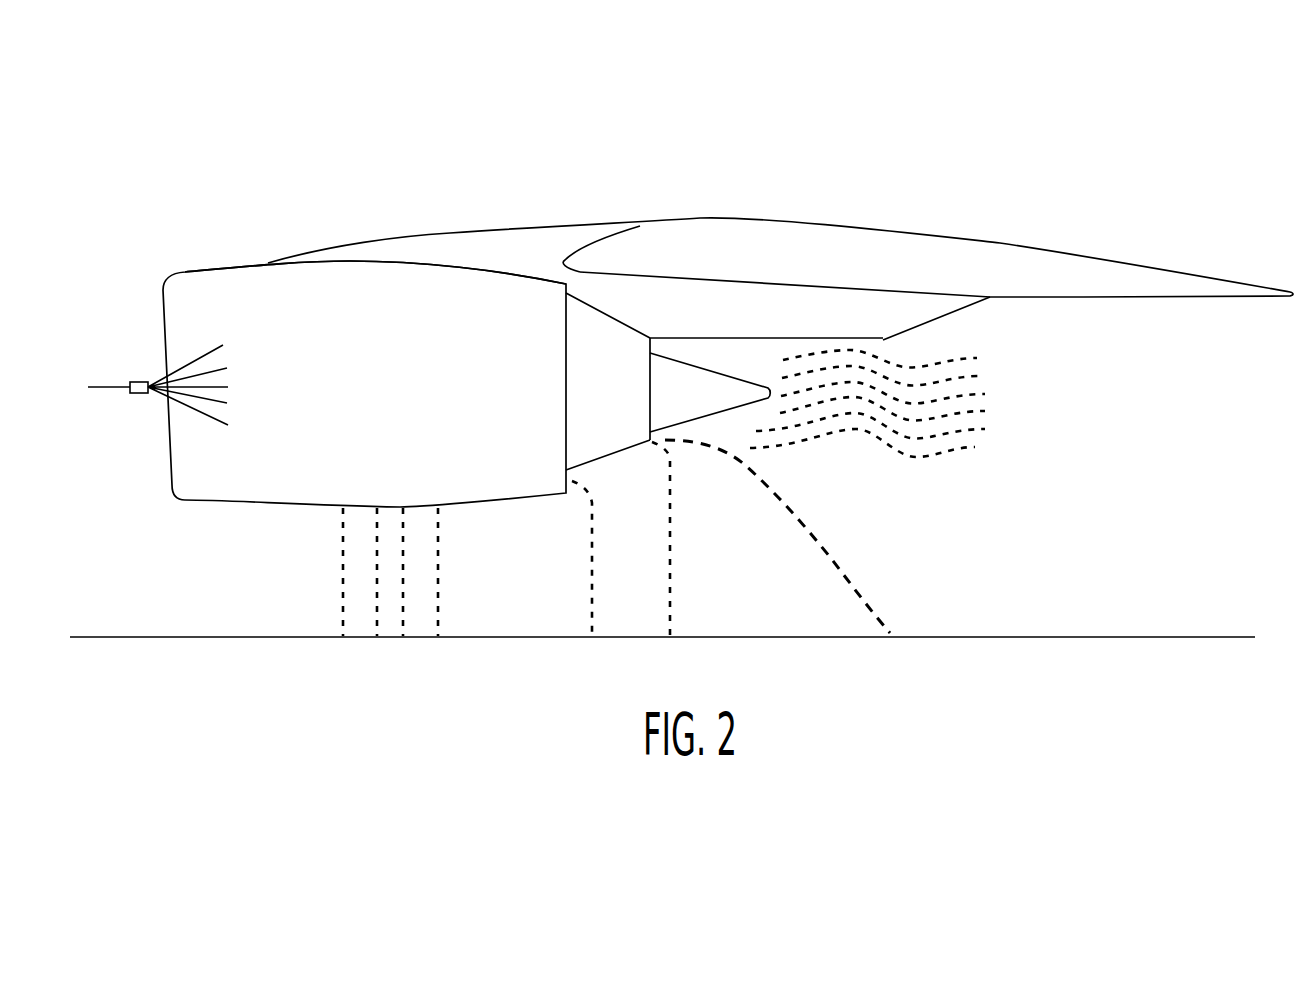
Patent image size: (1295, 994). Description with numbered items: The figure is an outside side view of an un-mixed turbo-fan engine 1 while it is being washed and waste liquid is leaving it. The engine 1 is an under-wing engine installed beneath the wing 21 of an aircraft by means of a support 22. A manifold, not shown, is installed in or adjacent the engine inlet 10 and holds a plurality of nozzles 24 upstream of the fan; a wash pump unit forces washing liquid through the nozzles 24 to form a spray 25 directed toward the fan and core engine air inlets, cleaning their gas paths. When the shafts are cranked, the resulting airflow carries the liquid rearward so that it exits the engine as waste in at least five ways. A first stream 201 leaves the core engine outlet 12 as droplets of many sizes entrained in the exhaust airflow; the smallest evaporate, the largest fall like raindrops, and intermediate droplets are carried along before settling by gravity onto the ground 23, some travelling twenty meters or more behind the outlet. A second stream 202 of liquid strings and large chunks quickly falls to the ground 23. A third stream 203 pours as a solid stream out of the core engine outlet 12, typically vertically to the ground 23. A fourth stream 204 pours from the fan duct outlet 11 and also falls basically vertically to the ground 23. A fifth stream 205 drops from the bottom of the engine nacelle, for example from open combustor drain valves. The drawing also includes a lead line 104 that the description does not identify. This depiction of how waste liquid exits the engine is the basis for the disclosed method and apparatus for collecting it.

The engine 1 is at (210, 285).
The engine inlet 10 is at (172, 470).
The fan duct outlet 11 is at (567, 297).
The core engine outlet 12 is at (650, 350).
The wing 21 is at (748, 237).
The support 22 is at (510, 243).
The exhaust nozzle 104 is at (693, 385).
The nozzles 24 is at (140, 380).
The spray 25 is at (195, 412).
The stream 201 is at (933, 453).
The stream 202 is at (830, 557).
The stream 203 is at (672, 542).
The stream 204 is at (592, 533).
The stream 205 is at (342, 571).
The ground 23 is at (1108, 633).